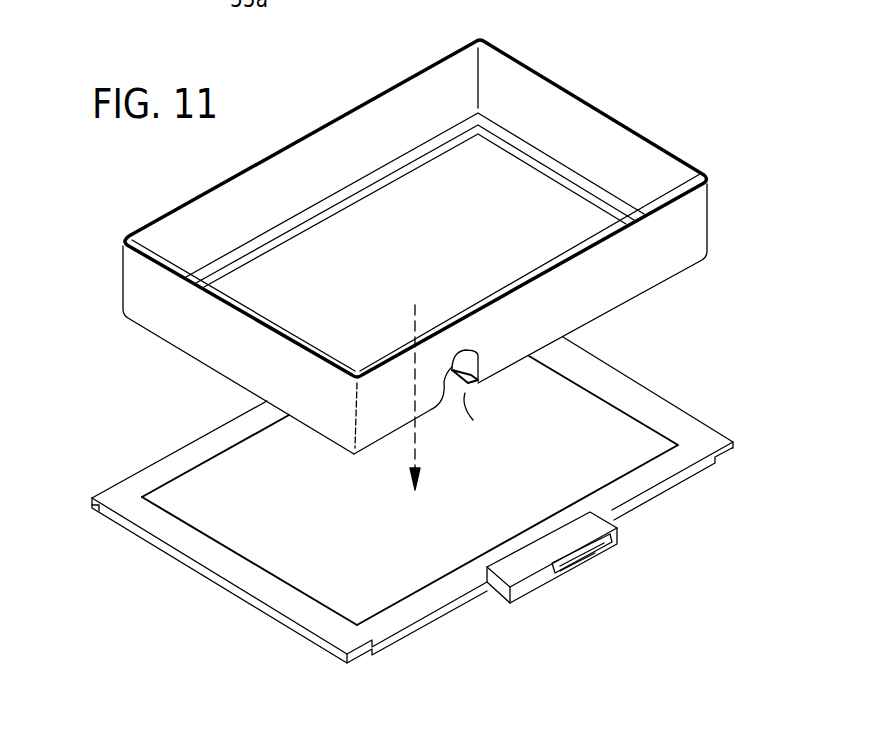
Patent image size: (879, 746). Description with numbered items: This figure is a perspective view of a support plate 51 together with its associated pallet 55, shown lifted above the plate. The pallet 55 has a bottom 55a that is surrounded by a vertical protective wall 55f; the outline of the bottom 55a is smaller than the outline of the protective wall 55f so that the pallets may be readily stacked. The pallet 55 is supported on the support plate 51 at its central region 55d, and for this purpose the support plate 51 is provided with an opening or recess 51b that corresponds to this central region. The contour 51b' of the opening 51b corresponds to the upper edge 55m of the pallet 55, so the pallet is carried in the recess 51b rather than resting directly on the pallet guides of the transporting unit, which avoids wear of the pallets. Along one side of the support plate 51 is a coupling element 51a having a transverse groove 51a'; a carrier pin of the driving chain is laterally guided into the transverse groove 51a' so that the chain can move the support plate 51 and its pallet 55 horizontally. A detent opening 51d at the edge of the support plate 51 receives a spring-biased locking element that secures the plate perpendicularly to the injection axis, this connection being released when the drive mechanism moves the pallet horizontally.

The pallet 55 is at (583, 92).
The upper edge 55m is at (438, 54).
The bottom 55a is at (513, 222).
The protective wall 55f is at (386, 158).
The central region 55d is at (313, 209).
The support plate 51 is at (132, 492).
The detent opening 51d is at (97, 512).
The recess 51b is at (410, 490).
The contour 51b' is at (249, 553).
The coupling element 51a is at (576, 568).
The transverse groove 51a' is at (637, 553).